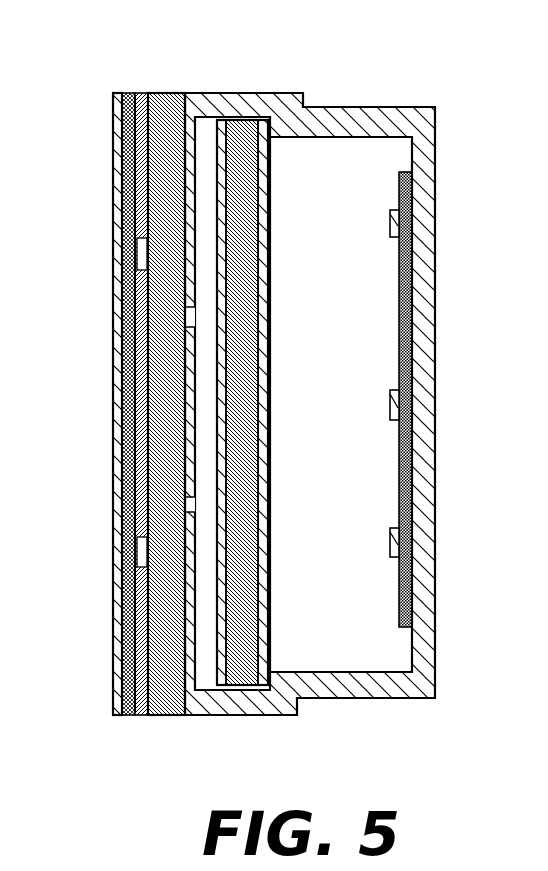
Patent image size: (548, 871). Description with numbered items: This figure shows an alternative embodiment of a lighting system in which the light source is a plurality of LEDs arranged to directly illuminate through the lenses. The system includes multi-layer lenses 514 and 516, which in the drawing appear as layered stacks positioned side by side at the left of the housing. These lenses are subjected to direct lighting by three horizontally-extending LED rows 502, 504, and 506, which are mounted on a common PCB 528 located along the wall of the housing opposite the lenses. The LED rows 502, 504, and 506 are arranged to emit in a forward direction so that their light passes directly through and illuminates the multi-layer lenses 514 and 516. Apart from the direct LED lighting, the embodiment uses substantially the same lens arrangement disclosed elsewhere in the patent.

The LED row 502 is at (390, 223).
The LED row 504 is at (390, 405).
The LED row 506 is at (390, 545).
The multi-layer lens 514 is at (255, 183).
The multi-layer lens 516 is at (163, 540).
The common PCB 528 is at (399, 468).